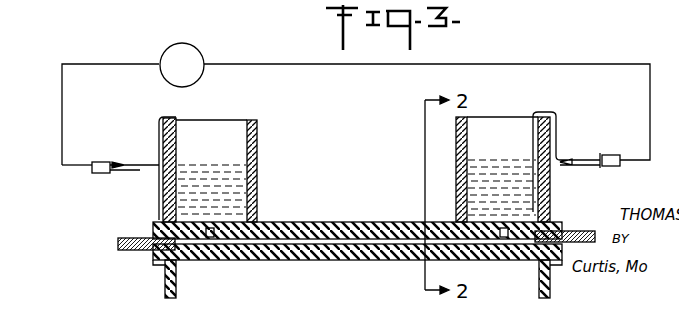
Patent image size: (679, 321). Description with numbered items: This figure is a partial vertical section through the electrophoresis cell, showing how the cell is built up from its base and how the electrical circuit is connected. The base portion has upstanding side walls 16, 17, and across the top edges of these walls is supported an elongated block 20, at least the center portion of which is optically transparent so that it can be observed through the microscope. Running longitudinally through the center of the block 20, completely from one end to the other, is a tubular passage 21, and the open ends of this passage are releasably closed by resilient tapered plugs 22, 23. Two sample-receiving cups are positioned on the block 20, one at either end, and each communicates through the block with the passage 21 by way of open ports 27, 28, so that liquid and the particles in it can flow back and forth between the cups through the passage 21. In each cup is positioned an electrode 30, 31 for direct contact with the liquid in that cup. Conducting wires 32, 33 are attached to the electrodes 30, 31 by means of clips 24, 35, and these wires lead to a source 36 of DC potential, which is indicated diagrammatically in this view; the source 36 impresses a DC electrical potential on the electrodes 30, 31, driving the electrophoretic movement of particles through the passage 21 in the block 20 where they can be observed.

The side wall 16 is at (537, 280).
The side wall 17 is at (177, 284).
The elongated block 20 is at (333, 222).
The tubular passage 21 is at (358, 262).
The resilient tapered plug 22 is at (118, 245).
The resilient tapered plug 23 is at (578, 238).
The clip 24 is at (108, 163).
The open port 27 is at (214, 222).
The open port 28 is at (505, 222).
The electrode 30 is at (178, 118).
The electrode 31 is at (554, 123).
The conducting wire 32 is at (63, 106).
The conducting wire 33 is at (650, 87).
The clip 35 is at (604, 152).
The source of DC potential 36 is at (200, 52).